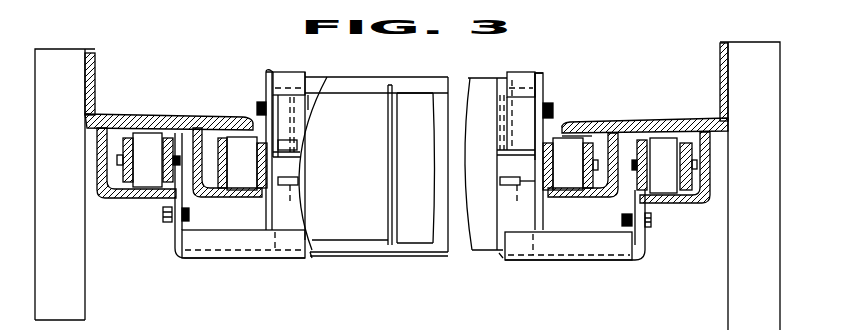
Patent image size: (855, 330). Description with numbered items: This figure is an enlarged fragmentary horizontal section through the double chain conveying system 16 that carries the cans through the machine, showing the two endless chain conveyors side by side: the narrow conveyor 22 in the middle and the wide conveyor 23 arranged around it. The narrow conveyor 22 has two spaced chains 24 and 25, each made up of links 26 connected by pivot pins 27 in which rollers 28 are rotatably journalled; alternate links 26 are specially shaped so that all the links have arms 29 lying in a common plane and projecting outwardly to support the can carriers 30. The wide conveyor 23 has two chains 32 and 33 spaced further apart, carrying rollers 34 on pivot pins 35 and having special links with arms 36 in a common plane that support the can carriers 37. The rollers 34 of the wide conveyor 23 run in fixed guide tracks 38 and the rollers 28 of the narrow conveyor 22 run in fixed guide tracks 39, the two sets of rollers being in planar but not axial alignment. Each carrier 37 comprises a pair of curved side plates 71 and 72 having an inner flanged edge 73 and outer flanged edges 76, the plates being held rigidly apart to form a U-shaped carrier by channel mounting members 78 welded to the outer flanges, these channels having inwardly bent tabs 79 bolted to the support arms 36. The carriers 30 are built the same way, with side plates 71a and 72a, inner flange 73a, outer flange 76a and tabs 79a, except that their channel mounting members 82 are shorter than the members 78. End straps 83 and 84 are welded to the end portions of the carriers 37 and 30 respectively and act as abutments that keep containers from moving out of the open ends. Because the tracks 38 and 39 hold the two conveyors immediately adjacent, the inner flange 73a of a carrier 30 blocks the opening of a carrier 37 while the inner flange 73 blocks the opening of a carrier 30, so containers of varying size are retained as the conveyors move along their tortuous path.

The double chain conveying system 16 is at (652, 66).
The narrow conveyor 22 is at (370, 72).
The wide conveyor 23 is at (338, 260).
The chain 24 is at (208, 140).
The chain 25 is at (601, 143).
The link 26 is at (262, 163).
The pivot pin 27 is at (219, 188).
The roller 28 is at (243, 180).
The arm 29 is at (264, 96).
The can carrier 30 is at (537, 65).
The chain 32 is at (112, 141).
The chain 33 is at (705, 146).
The roller 34 is at (144, 140).
The pivot pin 35 is at (120, 158).
The arm 36 is at (172, 230).
The can carrier 37 is at (403, 258).
The guide track 38 is at (119, 195).
The guide track 39 is at (194, 152).
The curved side plate 71 is at (293, 217).
The curved side plate 71a is at (309, 103).
The curved side plate 72 is at (420, 252).
The curved side plate 72a is at (422, 84).
The inner flanged edge 73 is at (299, 183).
The inner flanged edge 73a is at (297, 142).
The outer flanged edge 76 is at (312, 253).
The outer flanged edge 76a is at (499, 82).
The channel mounting member 78 is at (227, 262).
The inwardly bent tab 79 is at (168, 246).
The inwardly bent tab 79a is at (269, 75).
The channel mounting member 82 is at (289, 80).
The end strap 83 is at (292, 199).
The end strap 84 is at (294, 127).